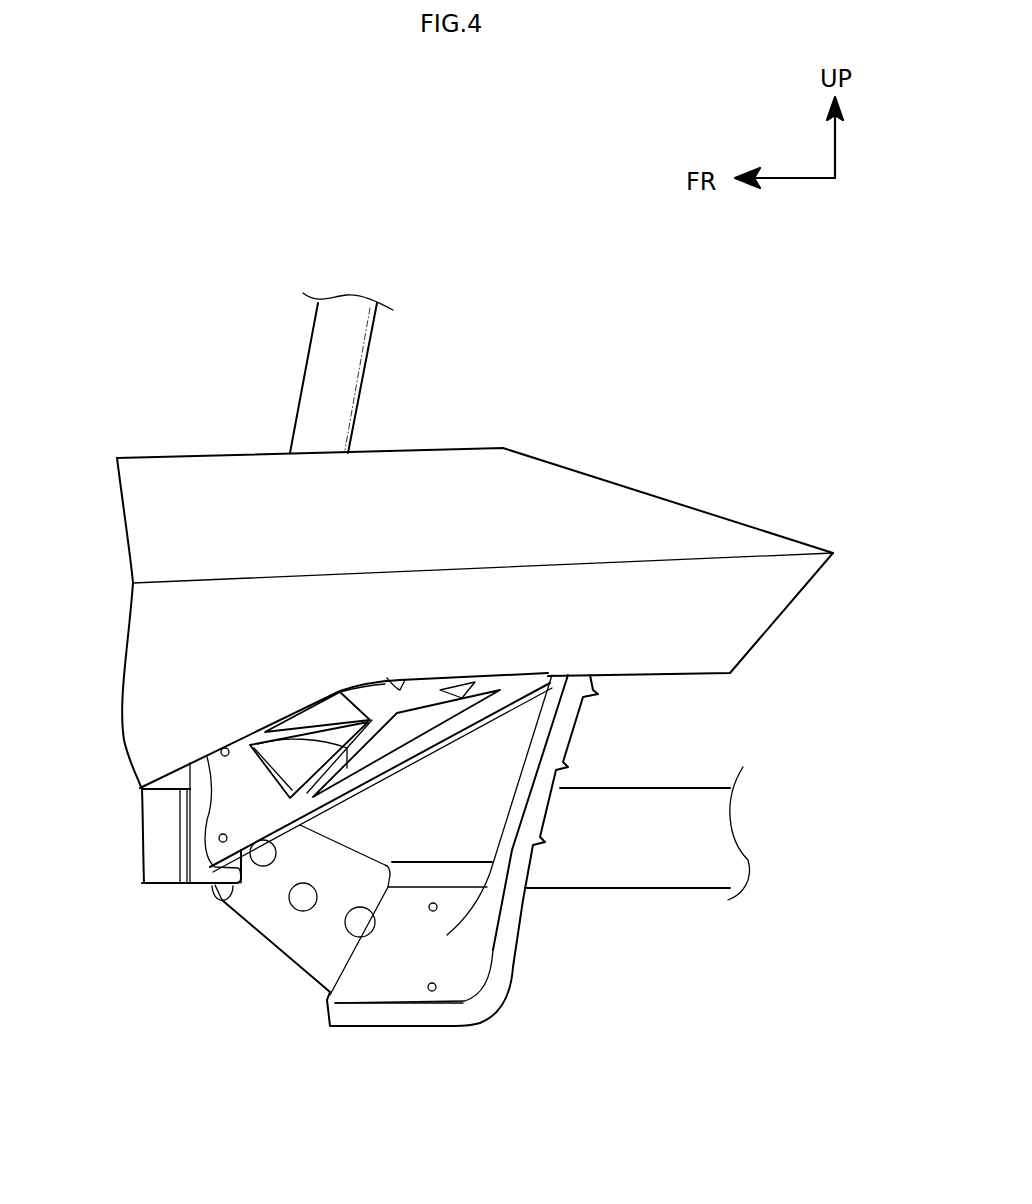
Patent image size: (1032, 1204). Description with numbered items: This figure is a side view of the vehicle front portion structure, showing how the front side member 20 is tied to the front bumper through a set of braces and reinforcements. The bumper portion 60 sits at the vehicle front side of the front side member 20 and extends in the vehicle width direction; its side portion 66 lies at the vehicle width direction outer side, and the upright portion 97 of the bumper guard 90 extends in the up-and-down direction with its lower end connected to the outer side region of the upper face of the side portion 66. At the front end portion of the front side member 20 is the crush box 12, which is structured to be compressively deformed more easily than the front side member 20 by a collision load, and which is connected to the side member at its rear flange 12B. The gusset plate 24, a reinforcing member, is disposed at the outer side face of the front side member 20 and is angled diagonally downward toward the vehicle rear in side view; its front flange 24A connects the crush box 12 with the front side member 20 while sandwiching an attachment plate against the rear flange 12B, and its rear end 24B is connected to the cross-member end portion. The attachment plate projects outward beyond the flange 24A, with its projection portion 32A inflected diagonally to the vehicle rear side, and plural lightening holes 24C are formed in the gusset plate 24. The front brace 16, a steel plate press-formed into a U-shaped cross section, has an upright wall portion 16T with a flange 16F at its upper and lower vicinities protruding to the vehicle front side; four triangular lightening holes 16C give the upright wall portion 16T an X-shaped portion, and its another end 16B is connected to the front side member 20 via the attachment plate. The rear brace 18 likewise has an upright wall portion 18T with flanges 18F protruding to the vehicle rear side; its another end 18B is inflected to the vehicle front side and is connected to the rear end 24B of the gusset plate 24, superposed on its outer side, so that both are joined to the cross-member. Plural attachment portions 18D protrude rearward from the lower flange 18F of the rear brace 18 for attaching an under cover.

The crush box 12 is at (156, 884).
The rear flange 12B is at (157, 875).
The front brace 16 is at (346, 776).
The another end of the front brace 16B is at (205, 772).
The lightening holes 16C is at (448, 682).
The flange 16F is at (432, 740).
The upright wall portion 16T is at (318, 798).
The rear brace 18 is at (512, 881).
The another end of the rear brace 18B is at (402, 1030).
The attachment portions 18D is at (599, 694).
The flange 18F is at (526, 912).
The upright wall portion 18T is at (497, 812).
The front side member 20 is at (680, 788).
The gusset plate 24 is at (320, 939).
The flange 24A is at (212, 892).
The rear end of the gusset plate 24B is at (328, 998).
The lightening holes 24C is at (388, 868).
The projection portion 32A is at (220, 903).
The bumper portion 60 is at (475, 584).
The side portion 66 is at (465, 442).
The bumper guard 90 is at (306, 373).
The upright portion 97 is at (297, 410).